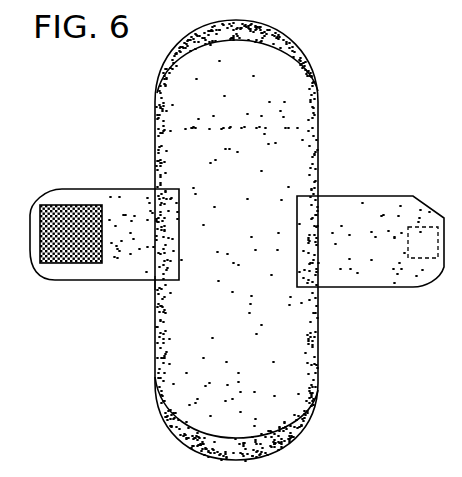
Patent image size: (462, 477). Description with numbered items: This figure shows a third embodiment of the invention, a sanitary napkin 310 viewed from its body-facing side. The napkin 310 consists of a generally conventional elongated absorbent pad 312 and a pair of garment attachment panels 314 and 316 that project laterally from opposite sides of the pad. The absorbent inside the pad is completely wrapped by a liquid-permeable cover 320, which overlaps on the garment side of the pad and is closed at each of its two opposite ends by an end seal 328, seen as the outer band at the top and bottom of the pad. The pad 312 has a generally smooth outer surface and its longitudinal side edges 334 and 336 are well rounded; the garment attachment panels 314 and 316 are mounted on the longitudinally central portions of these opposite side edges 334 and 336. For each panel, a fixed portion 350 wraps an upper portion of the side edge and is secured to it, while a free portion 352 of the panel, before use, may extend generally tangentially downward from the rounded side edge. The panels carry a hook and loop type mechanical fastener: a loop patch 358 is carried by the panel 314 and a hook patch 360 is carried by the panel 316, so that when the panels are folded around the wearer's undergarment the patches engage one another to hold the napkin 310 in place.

The sanitary napkin 310 is at (136, 84).
The elongated absorbent pad 312 is at (139, 113).
The garment attachment panel 314 is at (88, 182).
The garment attachment panel 316 is at (396, 185).
The liquid-permeable cover 320 is at (256, 139).
The end seal 328 is at (246, 28).
The side edge 334 is at (145, 332).
The side edge 336 is at (330, 327).
The fixed portion 350 is at (158, 282).
The free portion 352 is at (122, 283).
The loop patch 358 is at (72, 264).
The hook patch 360 is at (428, 278).